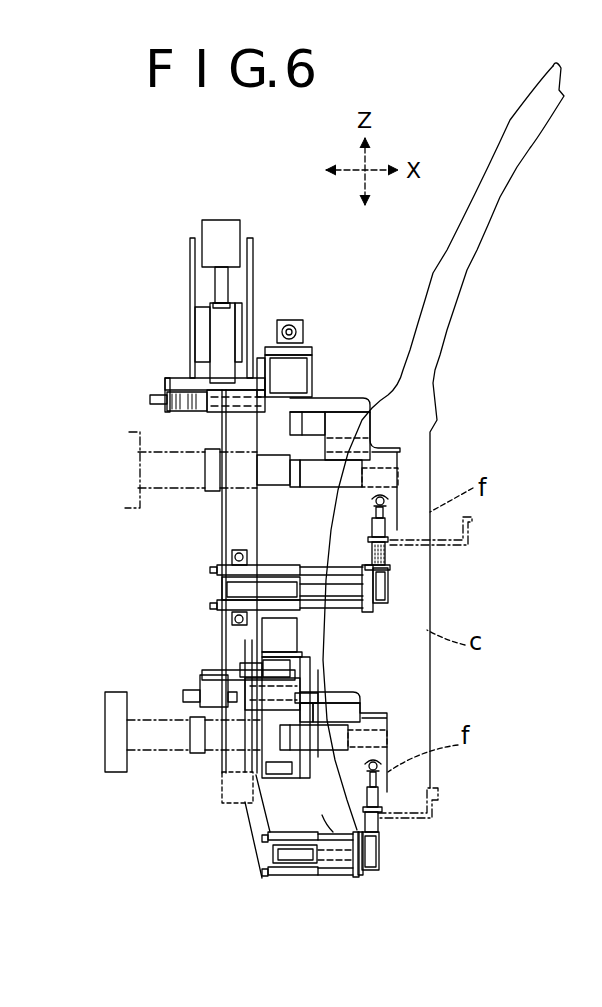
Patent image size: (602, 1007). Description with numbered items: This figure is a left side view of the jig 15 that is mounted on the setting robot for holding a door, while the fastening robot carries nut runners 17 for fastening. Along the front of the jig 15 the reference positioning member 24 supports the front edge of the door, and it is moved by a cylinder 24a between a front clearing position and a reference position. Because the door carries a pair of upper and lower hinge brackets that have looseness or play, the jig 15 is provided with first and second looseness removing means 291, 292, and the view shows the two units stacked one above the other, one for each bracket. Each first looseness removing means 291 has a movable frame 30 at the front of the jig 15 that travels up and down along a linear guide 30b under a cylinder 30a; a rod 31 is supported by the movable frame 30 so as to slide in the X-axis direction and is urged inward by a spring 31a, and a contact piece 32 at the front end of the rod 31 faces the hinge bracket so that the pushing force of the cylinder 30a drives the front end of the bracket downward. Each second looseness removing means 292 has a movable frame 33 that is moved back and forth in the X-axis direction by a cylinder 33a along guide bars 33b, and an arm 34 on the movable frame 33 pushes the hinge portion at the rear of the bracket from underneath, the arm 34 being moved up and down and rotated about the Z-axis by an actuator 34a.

The jig 15 is at (319, 295).
The nut runner 17 is at (268, 480).
The reference positioning member 24 is at (378, 440).
The cylinder 24a is at (300, 372).
The first looseness removing means 291 is at (404, 450).
The second looseness removing means 292 is at (392, 573).
The movable frame 30 is at (215, 333).
The cylinder 30a is at (228, 226).
The linear guide 30b is at (200, 357).
The rod 31 is at (348, 400).
The spring 31a is at (177, 413).
The contact piece 32 is at (400, 458).
The movable frame 33 is at (362, 563).
The cylinder 33a is at (235, 590).
The guide bars 33b is at (340, 608).
The arm 34 is at (465, 535).
The actuator 34a is at (390, 597).